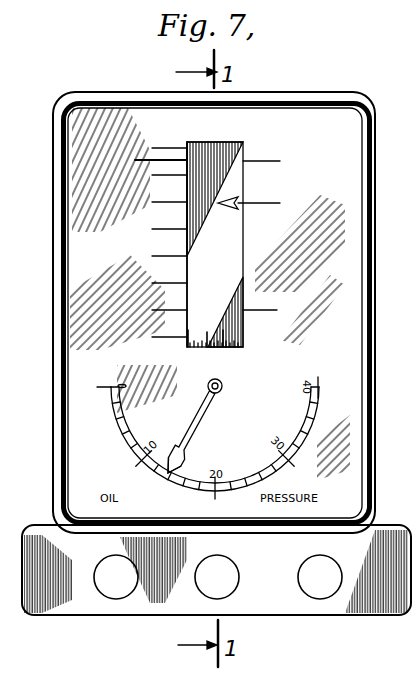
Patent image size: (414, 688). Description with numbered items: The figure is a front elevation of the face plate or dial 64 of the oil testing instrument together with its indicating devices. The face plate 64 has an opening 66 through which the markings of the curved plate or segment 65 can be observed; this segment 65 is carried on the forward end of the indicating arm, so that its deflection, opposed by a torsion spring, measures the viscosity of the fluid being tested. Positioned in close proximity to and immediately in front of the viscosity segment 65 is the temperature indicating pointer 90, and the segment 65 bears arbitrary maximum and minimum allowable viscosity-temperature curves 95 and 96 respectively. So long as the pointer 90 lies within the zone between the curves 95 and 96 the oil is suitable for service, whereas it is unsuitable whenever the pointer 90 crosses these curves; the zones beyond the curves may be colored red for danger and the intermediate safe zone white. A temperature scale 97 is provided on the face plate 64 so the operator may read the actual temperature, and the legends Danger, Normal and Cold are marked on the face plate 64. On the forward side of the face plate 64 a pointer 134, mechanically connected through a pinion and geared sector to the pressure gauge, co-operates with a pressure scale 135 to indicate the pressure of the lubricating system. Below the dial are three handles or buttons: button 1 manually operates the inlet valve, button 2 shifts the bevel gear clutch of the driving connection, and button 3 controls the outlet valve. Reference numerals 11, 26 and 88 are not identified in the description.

The handle or button 1 is at (124, 595).
The handle or button 2 is at (212, 597).
The handle or button 3 is at (330, 595).
The instrument housing 11 is at (405, 681).
The panel 26 is at (401, 7).
The face plate or dial 64 is at (333, 340).
The curved plate or segment 65 is at (188, 142).
The opening 66 is at (222, 142).
The bezel 88 is at (231, 312).
The temperature indicating device or pointer 90 is at (240, 200).
The maximum allowable viscosity-temperature curve 95 is at (195, 224).
The minimum allowable viscosity-temperature curve 96 is at (229, 302).
The temperature scale 97 is at (126, 242).
The pointer 134 is at (202, 422).
The pressure scale 135 is at (180, 474).